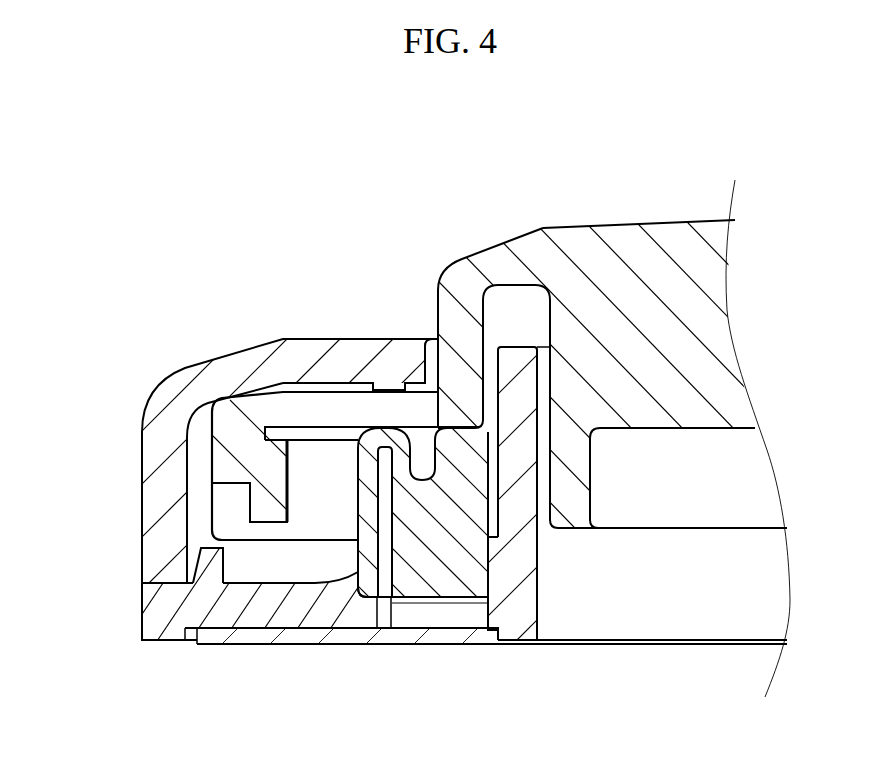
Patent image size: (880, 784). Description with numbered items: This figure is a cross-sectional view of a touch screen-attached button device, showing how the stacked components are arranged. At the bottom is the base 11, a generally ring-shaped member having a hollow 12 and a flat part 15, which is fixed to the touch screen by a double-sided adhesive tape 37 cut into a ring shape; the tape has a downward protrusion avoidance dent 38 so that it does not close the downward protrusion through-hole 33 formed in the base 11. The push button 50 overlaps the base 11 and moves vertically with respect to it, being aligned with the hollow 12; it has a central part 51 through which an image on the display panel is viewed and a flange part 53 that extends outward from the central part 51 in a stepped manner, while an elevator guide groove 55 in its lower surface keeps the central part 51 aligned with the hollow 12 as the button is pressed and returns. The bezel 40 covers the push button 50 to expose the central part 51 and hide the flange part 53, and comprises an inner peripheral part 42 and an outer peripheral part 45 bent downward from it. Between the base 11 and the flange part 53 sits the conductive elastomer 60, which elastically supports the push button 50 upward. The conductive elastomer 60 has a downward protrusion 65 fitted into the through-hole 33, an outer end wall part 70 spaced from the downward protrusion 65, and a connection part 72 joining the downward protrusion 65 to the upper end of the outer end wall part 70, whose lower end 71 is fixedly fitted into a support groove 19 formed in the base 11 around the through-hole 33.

The base 11 is at (140, 632).
The hollow 12 is at (690, 596).
The flat part 15 is at (253, 583).
The support groove 19 is at (378, 577).
The downward protrusion through-hole 33 is at (463, 605).
The double-sided adhesive tape 37 is at (253, 647).
The downward protrusion avoidance dent 38 is at (370, 640).
The bezel 40 is at (153, 380).
The inner peripheral part 42 is at (383, 339).
The outer peripheral part 45 is at (142, 493).
The push button 50 is at (583, 226).
The central part 51 is at (670, 221).
The flange part 53 is at (323, 428).
The elevator guide groove 55 is at (523, 310).
The conductive elastomer 60 is at (267, 343).
The downward protrusion 65 is at (430, 600).
The outer end wall part 70 is at (358, 485).
The lower end 71 is at (375, 597).
The connection part 72 is at (383, 430).